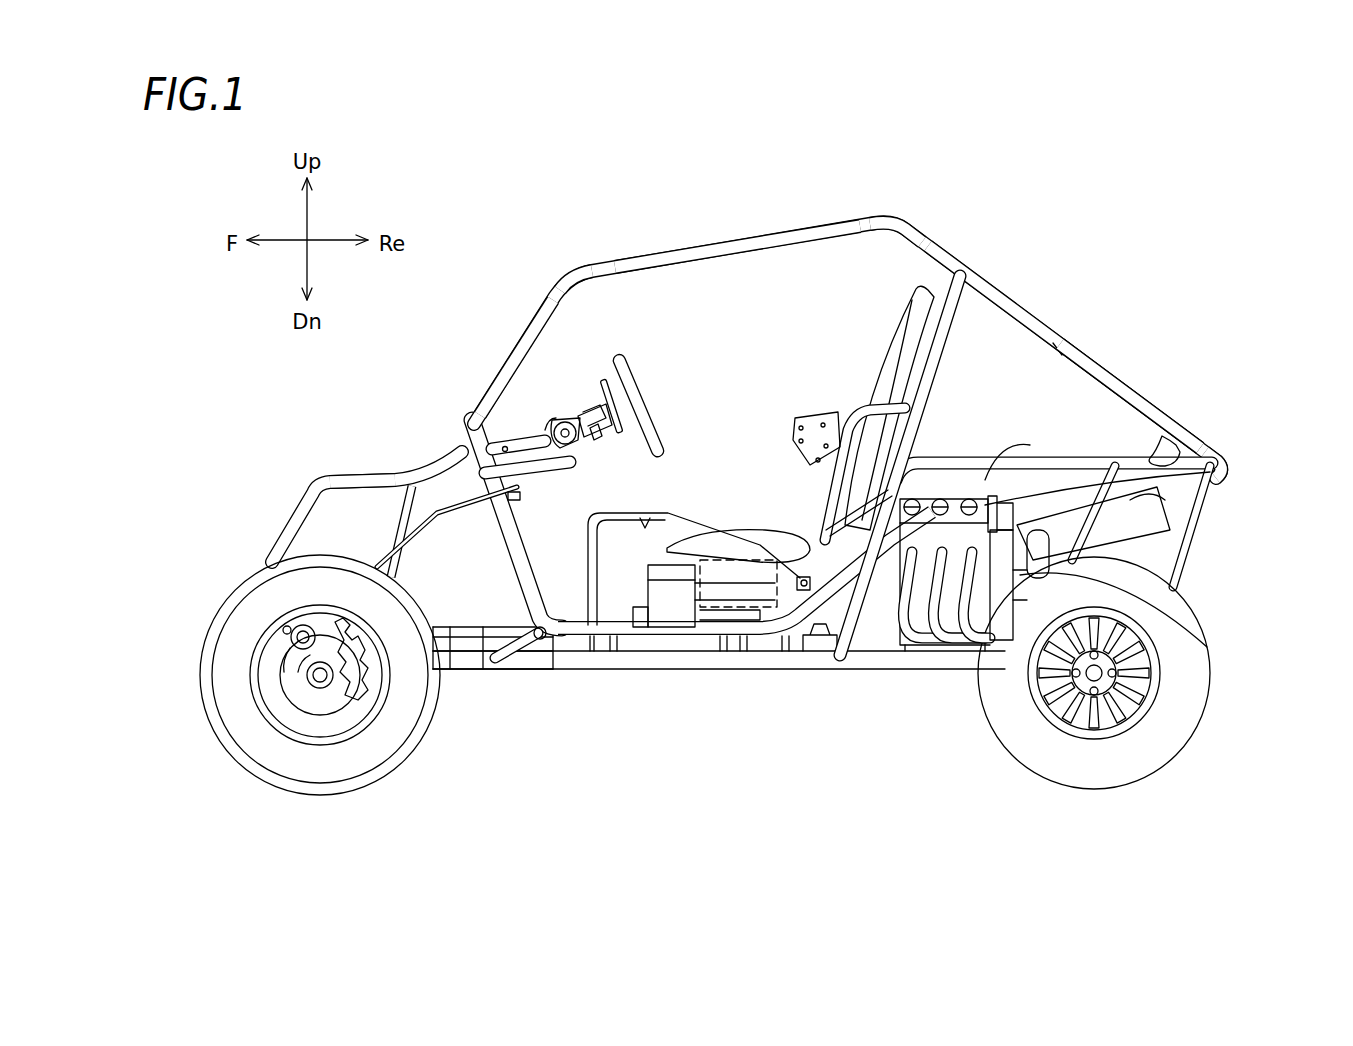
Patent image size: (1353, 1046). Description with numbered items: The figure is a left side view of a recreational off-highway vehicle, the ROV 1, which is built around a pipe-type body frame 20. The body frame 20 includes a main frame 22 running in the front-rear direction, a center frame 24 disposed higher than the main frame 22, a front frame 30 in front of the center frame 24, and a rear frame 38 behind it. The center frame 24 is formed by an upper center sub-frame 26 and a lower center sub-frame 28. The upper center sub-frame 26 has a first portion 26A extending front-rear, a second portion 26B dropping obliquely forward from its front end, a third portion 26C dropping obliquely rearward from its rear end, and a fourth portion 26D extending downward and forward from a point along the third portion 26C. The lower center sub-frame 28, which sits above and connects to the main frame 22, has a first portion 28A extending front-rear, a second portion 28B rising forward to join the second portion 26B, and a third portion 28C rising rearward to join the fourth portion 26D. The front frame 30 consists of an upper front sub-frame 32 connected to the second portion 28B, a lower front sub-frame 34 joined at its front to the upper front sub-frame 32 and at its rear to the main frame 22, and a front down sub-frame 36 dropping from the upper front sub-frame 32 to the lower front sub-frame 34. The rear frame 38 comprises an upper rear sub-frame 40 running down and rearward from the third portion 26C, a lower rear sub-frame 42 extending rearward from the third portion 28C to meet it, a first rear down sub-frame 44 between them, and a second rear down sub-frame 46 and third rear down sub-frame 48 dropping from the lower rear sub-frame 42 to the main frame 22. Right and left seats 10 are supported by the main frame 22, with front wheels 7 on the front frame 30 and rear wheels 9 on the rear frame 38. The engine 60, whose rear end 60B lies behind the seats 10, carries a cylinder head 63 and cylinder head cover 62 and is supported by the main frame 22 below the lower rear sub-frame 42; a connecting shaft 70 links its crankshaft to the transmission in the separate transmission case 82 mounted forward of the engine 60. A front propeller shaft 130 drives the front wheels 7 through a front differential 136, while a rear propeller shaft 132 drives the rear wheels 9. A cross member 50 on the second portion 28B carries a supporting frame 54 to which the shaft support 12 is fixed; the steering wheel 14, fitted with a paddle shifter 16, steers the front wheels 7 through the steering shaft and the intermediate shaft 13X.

The recreational off-highway vehicle (ROV) 1 is at (1138, 280).
The front wheels 7 is at (218, 712).
The rear wheels 9 is at (1195, 733).
The seats 10 is at (882, 368).
The shaft support 12 is at (567, 412).
The intermediate shaft 13X is at (440, 512).
The steering wheel 14 is at (627, 355).
The paddle shifter 16 is at (603, 378).
The body frame 20 is at (1032, 293).
The main frame 22 is at (657, 662).
The center frame 24 is at (570, 280).
The upper center sub-frame 26 is at (712, 254).
The first portion 26A is at (670, 258).
The second portion 26B is at (541, 330).
The third portion 26C is at (929, 240).
The fourth portion 26D is at (1006, 305).
The lower center sub-frame 28 is at (583, 636).
The first portion 28A is at (707, 636).
The second portion 28B is at (520, 553).
The third portion 28C is at (870, 636).
The front frame 30 is at (290, 503).
The upper front sub-frame 32 is at (348, 475).
The lower front sub-frame 34 is at (460, 658).
The front down sub-frame 36 is at (383, 528).
The rear frame 38 is at (1146, 392).
The upper rear sub-frame 40 is at (1157, 412).
The lower rear sub-frame 42 is at (1192, 459).
The first rear down sub-frame 44 is at (1155, 446).
The second rear down sub-frame 46 is at (1183, 578).
The third rear down sub-frame 48 is at (1090, 537).
The cross member 50 is at (496, 440).
The supporting frame 54 is at (537, 640).
The engine 60 is at (1135, 483).
The rear end 60B is at (1205, 648).
The cylinder head cover 62 is at (957, 500).
The cylinder head 63 is at (993, 557).
The connecting shaft 70 is at (790, 560).
The transmission case 82 is at (678, 636).
The front propeller shaft 130 is at (438, 662).
The rear propeller shaft 132 is at (813, 636).
The front differential 136 is at (272, 620).